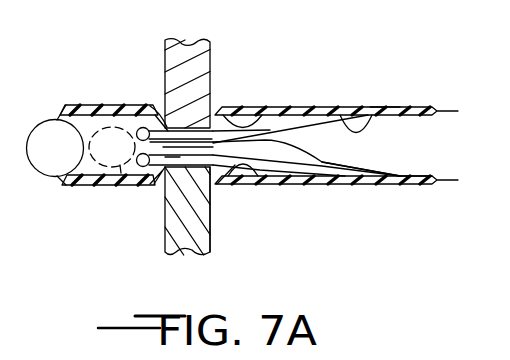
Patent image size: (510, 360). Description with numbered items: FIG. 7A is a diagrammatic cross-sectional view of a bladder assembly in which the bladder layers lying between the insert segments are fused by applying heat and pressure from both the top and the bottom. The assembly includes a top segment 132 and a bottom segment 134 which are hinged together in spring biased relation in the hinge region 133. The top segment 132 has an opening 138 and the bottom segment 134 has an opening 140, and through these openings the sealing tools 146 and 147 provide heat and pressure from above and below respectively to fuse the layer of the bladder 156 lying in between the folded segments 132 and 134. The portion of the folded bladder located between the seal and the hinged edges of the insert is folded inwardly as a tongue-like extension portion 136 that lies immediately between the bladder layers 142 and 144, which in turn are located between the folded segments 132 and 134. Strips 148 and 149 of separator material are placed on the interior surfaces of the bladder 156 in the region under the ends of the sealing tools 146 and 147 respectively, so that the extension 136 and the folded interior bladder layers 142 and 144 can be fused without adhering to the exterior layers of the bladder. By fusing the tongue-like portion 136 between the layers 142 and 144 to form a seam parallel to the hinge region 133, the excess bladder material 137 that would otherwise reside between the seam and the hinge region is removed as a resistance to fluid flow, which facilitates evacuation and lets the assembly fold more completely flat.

The top segment 132 is at (353, 105).
The hinge region 133 is at (36, 113).
The bottom segment 134 is at (393, 186).
The tongue-like extension portion 136 is at (209, 206).
The excess bladder material 137 is at (119, 180).
The opening 138 is at (265, 111).
The opening 140 is at (262, 180).
The bladder layer 142 is at (380, 105).
The bladder layer 144 is at (400, 173).
The sealing tool 146 is at (211, 62).
The sealing tool 147 is at (165, 236).
The strip of separator material 148 is at (150, 116).
The strip of separator material 149 is at (335, 160).
The bladder 156 is at (218, 110).